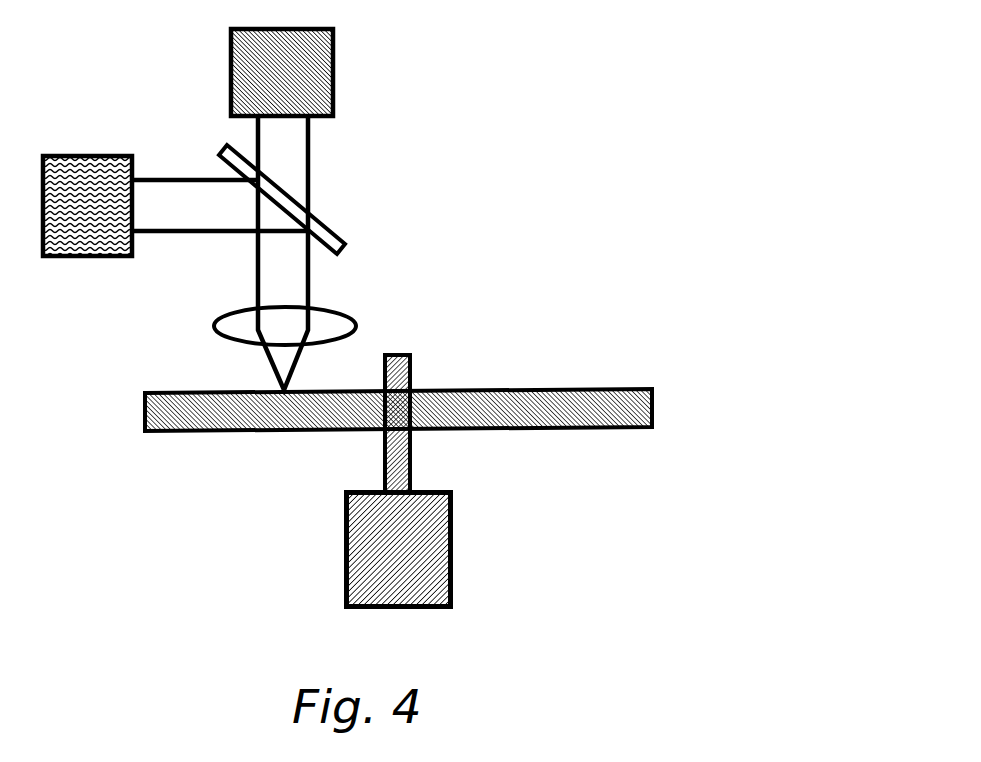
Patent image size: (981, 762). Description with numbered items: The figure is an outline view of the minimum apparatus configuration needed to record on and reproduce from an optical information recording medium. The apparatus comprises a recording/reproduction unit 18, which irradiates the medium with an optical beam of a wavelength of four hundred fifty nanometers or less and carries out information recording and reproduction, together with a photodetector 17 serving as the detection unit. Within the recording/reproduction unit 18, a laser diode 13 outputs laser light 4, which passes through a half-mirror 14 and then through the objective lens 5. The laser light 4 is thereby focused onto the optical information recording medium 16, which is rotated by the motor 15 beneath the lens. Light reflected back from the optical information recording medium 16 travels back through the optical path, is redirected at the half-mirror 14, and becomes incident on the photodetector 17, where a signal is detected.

The laser diode 13 is at (335, 66).
The laser light 4 is at (312, 153).
The half-mirror 14 is at (320, 217).
The objective lens 5 is at (357, 323).
The optical information recording medium 16 is at (477, 389).
The motor 15 is at (450, 519).
The photodetector 17 is at (81, 260).
The recording/reproduction unit 18 is at (563, 115).